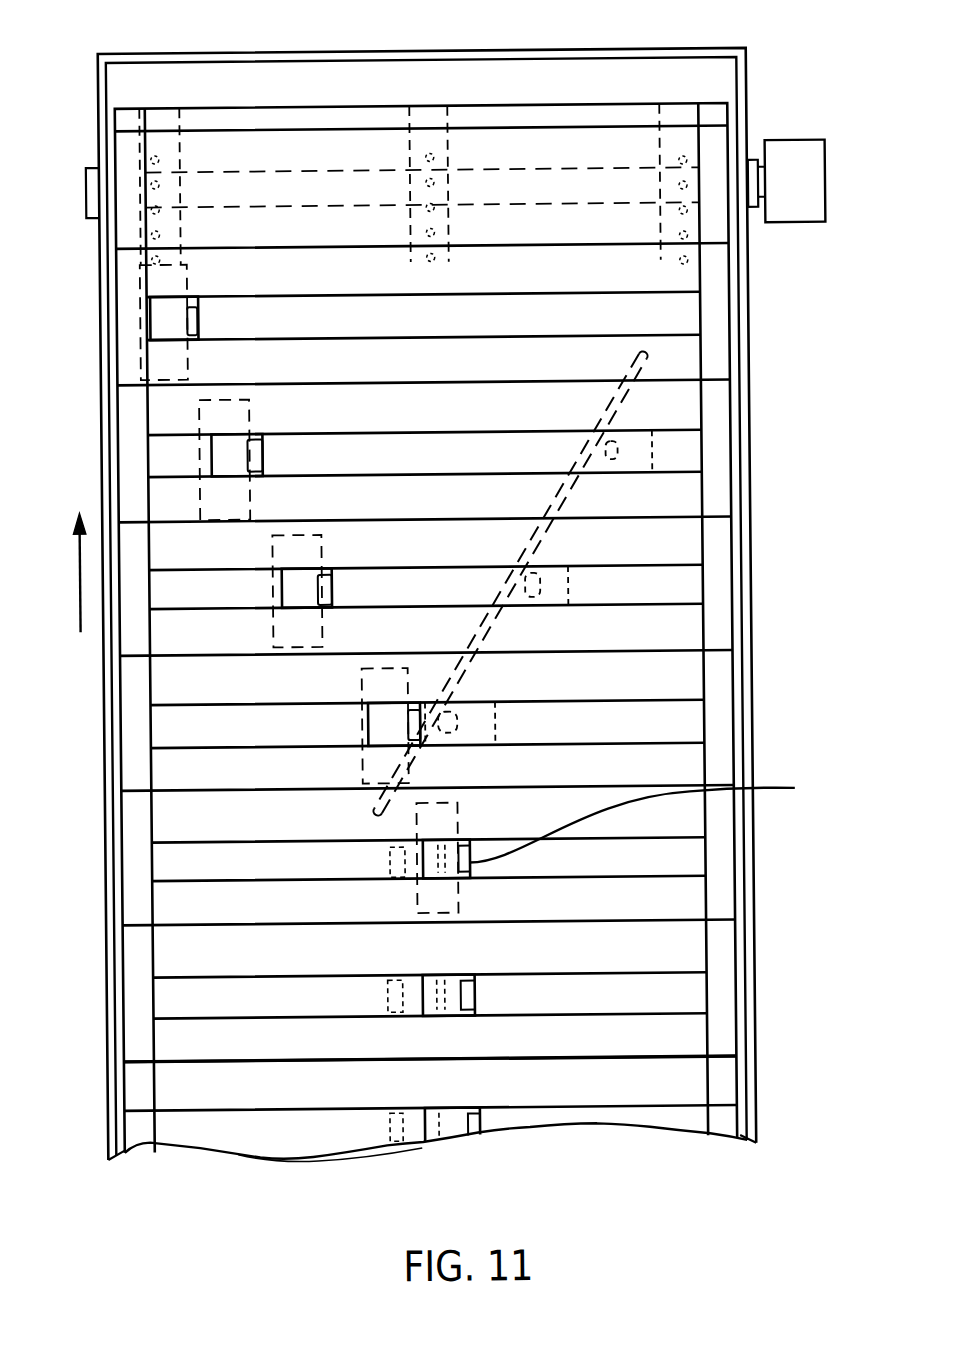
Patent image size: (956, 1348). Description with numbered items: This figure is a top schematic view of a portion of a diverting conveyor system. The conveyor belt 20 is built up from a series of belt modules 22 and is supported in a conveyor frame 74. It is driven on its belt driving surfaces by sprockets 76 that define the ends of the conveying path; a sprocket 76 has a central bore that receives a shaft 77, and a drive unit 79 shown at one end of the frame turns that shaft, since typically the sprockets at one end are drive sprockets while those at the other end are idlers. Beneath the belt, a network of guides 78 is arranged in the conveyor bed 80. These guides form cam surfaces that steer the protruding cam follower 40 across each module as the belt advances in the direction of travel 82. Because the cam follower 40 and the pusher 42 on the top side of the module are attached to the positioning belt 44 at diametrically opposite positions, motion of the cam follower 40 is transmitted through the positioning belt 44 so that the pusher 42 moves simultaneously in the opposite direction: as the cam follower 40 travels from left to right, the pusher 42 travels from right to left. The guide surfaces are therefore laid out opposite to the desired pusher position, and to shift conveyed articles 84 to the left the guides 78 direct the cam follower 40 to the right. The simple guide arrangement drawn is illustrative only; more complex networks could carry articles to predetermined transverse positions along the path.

The conveyor belt 20 is at (719, 1042).
The belt module 22 is at (730, 891).
The cam follower 40 is at (564, 608).
The pusher 42 is at (657, 814).
The positioning belt 44 is at (697, 993).
The conveyor frame 74 is at (575, 51).
The sprocket 76 is at (173, 115).
The shaft 77 is at (506, 179).
The guide 78 is at (584, 491).
The motor 79 is at (826, 182).
The conveyor bed 80 is at (727, 75).
The direction of travel 82 is at (80, 577).
The conveyed article 84 is at (273, 632).